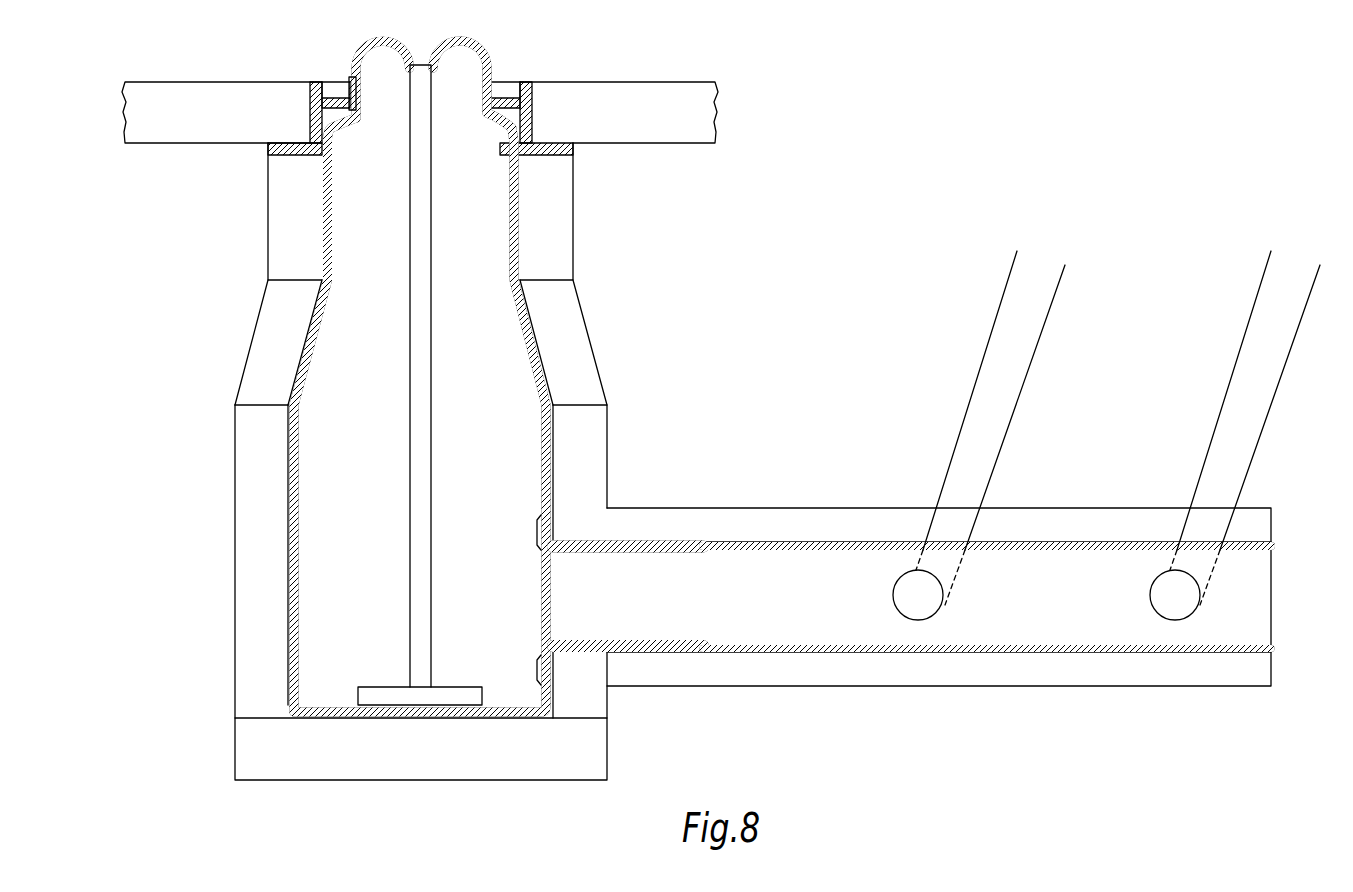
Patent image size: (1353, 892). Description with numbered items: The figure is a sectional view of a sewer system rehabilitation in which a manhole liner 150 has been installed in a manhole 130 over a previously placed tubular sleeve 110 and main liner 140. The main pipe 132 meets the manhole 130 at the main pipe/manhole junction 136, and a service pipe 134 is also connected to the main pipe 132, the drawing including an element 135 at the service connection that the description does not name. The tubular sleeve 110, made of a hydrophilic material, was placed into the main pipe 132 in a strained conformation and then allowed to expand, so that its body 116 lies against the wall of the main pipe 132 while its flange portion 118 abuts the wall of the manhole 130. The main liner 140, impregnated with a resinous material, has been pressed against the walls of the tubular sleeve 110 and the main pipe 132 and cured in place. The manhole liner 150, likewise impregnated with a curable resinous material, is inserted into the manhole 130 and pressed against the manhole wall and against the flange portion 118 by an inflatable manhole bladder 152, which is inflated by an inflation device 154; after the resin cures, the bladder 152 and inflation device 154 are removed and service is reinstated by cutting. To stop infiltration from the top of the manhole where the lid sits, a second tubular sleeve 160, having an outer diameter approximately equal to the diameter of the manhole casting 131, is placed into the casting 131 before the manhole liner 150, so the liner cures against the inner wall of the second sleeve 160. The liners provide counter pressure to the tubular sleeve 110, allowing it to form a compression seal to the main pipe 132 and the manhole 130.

The tubular sleeve 110 is at (667, 542).
The body 116 is at (668, 654).
The flange portion 118 is at (553, 528).
The manhole 130 is at (611, 332).
The manhole casting 131 is at (523, 82).
The main pipe 132 is at (1050, 508).
The service pipe 134 is at (952, 430).
The anchor bars 135 is at (893, 597).
The main pipe/manhole junction 136 is at (553, 540).
The main liner 140 is at (776, 645).
The manhole liner 150 is at (292, 439).
The inflatable manhole bladder 152 is at (300, 488).
The inflation device 154 is at (410, 625).
The second tubular sleeve 160 is at (350, 100).